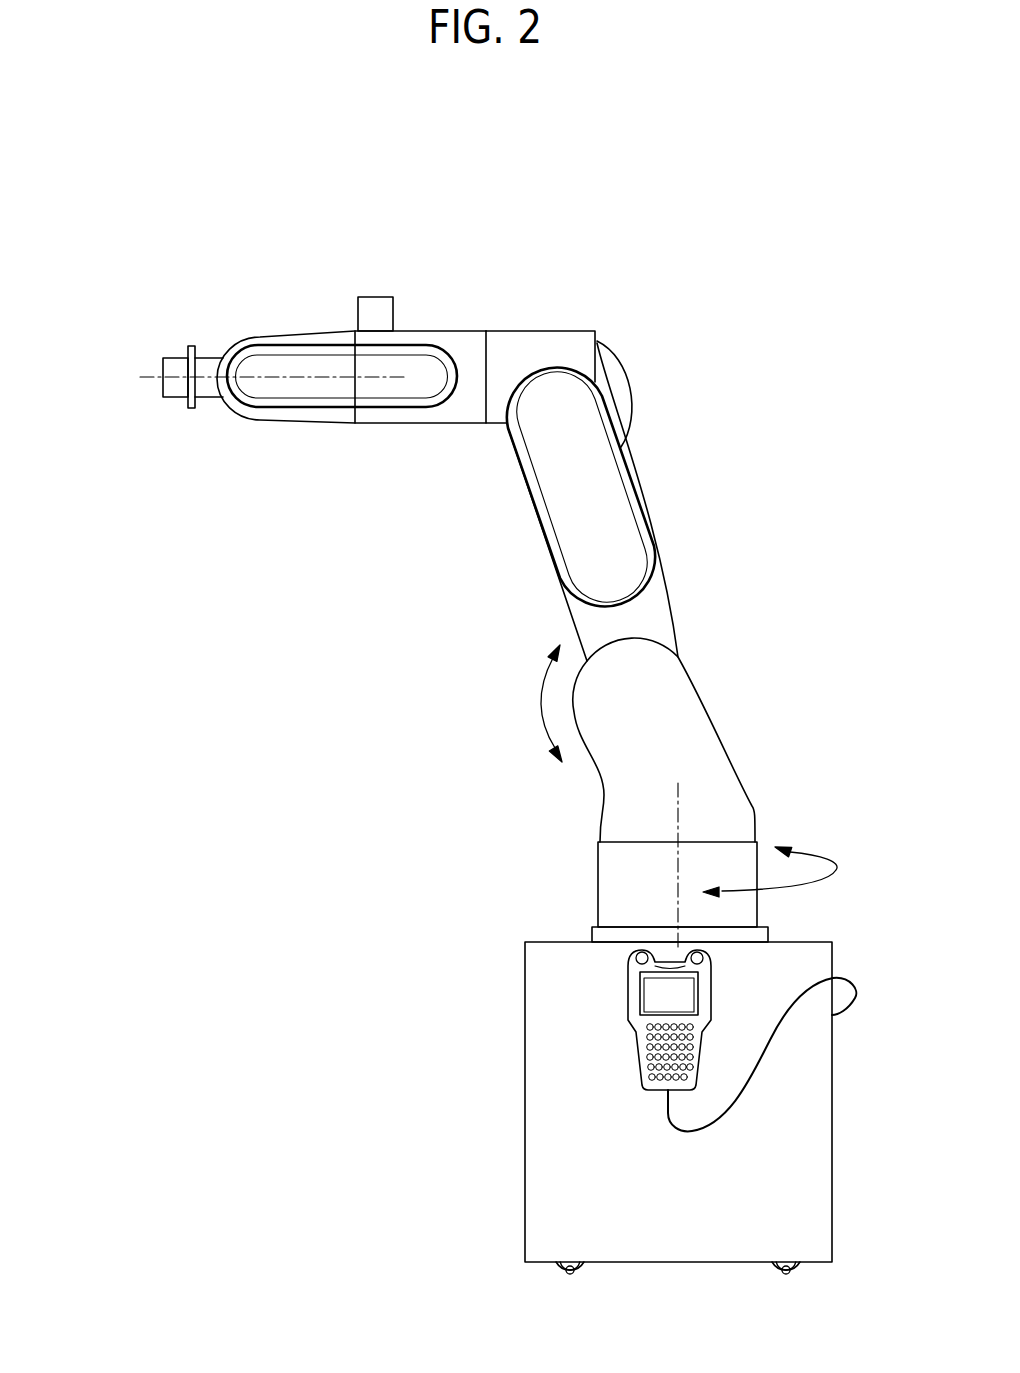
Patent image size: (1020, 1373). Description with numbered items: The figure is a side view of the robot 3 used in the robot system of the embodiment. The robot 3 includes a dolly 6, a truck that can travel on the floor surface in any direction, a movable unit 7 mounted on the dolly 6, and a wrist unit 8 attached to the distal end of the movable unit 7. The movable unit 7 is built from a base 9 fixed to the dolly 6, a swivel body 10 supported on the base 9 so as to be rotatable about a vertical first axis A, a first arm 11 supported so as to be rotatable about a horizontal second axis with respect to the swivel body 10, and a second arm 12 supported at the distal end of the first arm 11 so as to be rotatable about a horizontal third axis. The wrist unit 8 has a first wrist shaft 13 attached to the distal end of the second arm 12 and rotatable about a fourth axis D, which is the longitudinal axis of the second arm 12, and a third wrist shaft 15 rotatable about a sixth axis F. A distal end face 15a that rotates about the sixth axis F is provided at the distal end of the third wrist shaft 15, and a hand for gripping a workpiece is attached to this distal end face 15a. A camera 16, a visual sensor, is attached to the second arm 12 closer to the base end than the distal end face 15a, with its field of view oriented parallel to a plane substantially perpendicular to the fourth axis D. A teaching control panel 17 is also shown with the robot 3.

The robot 3 is at (735, 198).
The dolly 6 is at (525, 1102).
The movable unit 7 is at (697, 412).
The wrist unit 8 is at (140, 346).
The base 9 is at (768, 935).
The swivel body 10 is at (598, 885).
The first arm 11 is at (640, 478).
The second arm 12 is at (532, 330).
The first wrist shaft 13 is at (272, 337).
The third wrist shaft 15 is at (171, 357).
The distal end face 15a is at (163, 385).
The camera 16 is at (373, 297).
The teaching control panel 17 is at (652, 992).
The first axis A is at (678, 812).
The fourth axis D is at (373, 377).
The sixth axis F is at (205, 378).